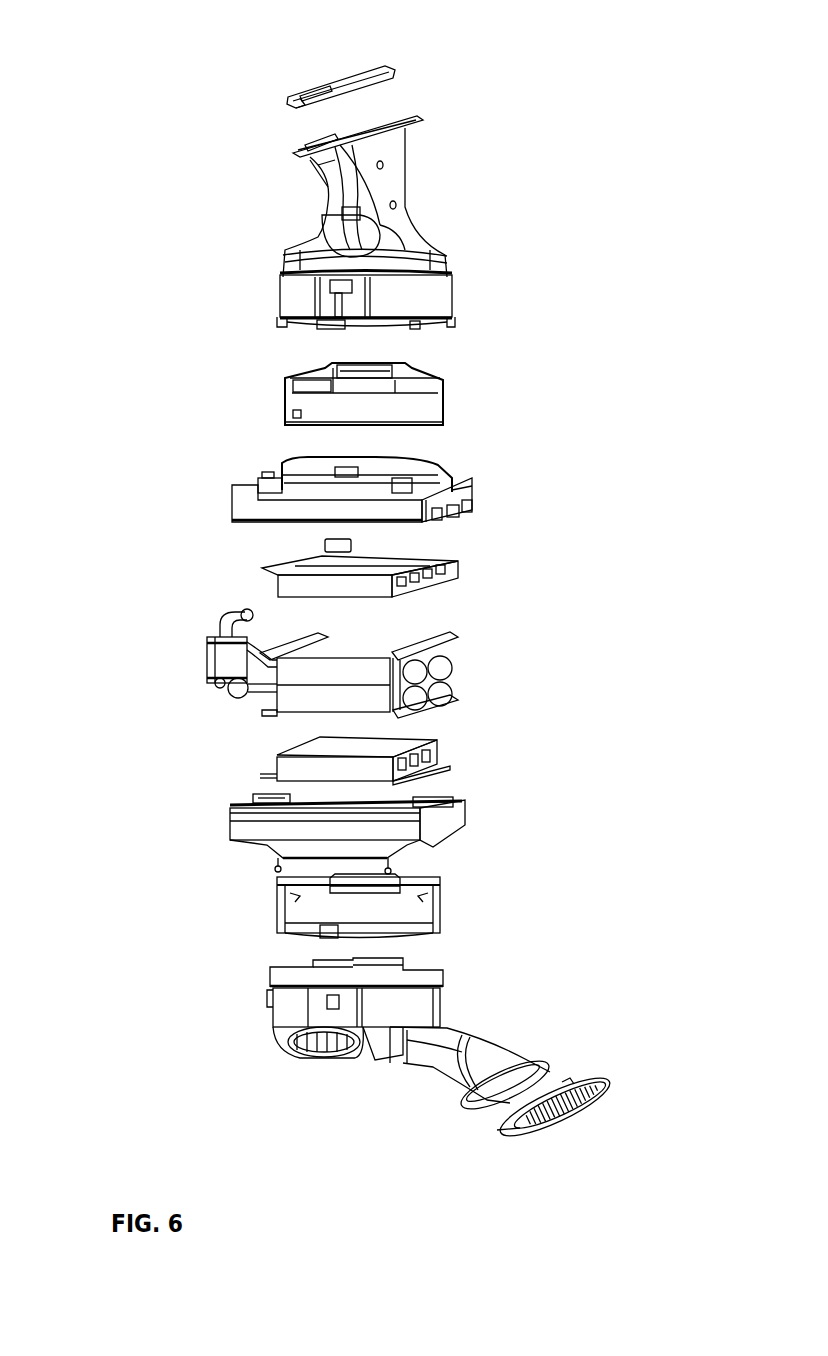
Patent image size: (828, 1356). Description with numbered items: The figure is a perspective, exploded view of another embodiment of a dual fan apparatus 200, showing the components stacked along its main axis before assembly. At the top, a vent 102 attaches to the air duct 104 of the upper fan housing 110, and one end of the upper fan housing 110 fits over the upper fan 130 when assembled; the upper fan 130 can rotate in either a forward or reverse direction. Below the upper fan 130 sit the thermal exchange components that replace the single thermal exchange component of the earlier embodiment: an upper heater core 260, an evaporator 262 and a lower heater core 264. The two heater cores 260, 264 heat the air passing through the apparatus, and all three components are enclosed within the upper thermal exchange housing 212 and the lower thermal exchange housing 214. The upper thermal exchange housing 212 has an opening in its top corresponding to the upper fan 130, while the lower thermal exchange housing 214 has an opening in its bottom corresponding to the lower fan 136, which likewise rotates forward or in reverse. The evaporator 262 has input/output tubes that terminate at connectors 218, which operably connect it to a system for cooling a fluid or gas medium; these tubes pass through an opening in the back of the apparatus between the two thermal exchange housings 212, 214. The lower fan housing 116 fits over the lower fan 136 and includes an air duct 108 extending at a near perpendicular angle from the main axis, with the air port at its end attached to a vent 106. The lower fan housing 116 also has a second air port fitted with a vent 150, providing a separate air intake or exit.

The dual fan apparatus 200 is at (99, 166).
The vent 102 is at (322, 73).
The air duct 104 is at (410, 147).
The upper fan housing 110 is at (458, 295).
The upper fan 130 is at (448, 397).
The upper thermal exchange housing 212 is at (472, 490).
The upper heater core 260 is at (455, 571).
The connectors 218 is at (197, 609).
The evaporator 262 is at (455, 671).
The lower heater core 264 is at (450, 757).
The lower thermal exchange housing 214 is at (468, 827).
The lower fan 136 is at (445, 906).
The lower fan housing 116 is at (446, 1000).
The vent 150 is at (268, 1050).
The air duct 108 is at (438, 1088).
The vent 106 is at (594, 1122).